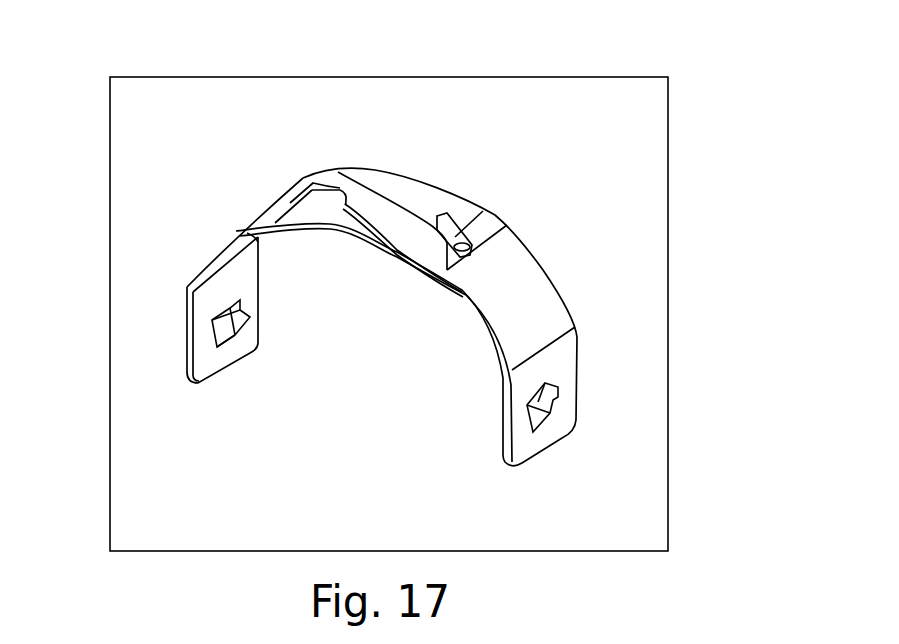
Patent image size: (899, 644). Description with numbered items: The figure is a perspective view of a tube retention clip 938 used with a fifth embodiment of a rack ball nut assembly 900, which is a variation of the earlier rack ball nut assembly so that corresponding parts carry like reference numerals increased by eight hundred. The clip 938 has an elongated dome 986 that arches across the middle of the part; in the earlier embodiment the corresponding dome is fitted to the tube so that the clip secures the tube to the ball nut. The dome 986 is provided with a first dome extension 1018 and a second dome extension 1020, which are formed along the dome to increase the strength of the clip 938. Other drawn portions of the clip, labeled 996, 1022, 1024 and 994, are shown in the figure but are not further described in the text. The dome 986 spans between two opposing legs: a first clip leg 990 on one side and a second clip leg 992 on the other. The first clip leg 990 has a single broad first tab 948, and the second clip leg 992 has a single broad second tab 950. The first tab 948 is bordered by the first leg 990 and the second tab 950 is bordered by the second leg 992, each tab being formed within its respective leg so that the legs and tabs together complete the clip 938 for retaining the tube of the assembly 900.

The rack ball nut assembly 900 is at (668, 157).
The first leg 996 is at (217, 233).
The second dome extension 1020 is at (305, 178).
The outer band 1022 is at (413, 177).
The elongated dome 986 is at (373, 195).
The lower band edge 1024 is at (397, 258).
The first dome extension 1018 is at (453, 233).
The tube retention clip 938 is at (440, 203).
The second band portion 994 is at (535, 290).
The first clip leg 990 is at (560, 360).
The first tab 948 is at (557, 433).
The second clip leg 992 is at (200, 313).
The second tab 950 is at (235, 340).